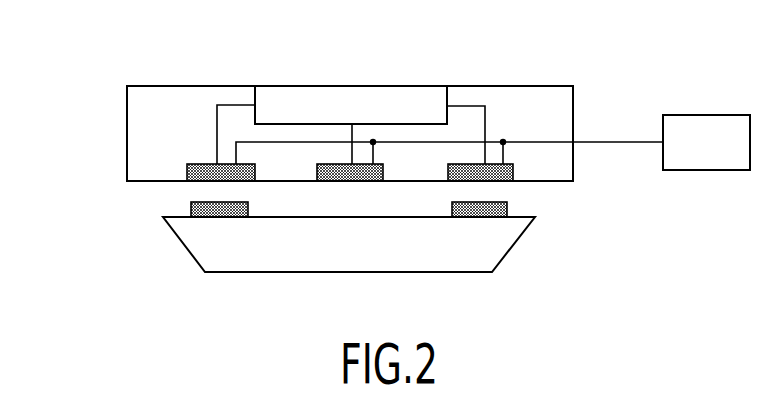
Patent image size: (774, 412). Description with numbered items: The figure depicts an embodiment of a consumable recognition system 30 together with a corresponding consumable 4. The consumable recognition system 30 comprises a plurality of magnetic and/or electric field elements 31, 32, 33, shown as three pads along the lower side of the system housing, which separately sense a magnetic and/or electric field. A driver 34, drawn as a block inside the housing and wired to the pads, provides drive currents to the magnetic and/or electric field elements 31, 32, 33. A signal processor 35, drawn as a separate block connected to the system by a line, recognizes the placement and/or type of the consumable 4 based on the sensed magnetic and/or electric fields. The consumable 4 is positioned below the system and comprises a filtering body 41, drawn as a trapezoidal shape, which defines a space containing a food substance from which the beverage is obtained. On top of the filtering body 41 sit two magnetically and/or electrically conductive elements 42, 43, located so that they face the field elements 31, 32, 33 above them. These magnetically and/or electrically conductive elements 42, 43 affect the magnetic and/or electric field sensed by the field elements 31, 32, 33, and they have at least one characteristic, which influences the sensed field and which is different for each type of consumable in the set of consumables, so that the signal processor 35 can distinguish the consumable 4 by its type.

The consumable recognition system 30 is at (100, 124).
The magnetic and/or electric field element 31 is at (209, 164).
The magnetic and/or electric field element 32 is at (383, 164).
The magnetic and/or electric field element 33 is at (513, 164).
The driver 34 is at (343, 86).
The signal processor 35 is at (707, 115).
The consumable 4 is at (347, 244).
The filtering body 41 is at (505, 258).
The magnetically and/or electrically conductive element 42 is at (191, 208).
The magnetically and/or electrically conductive element 43 is at (507, 207).